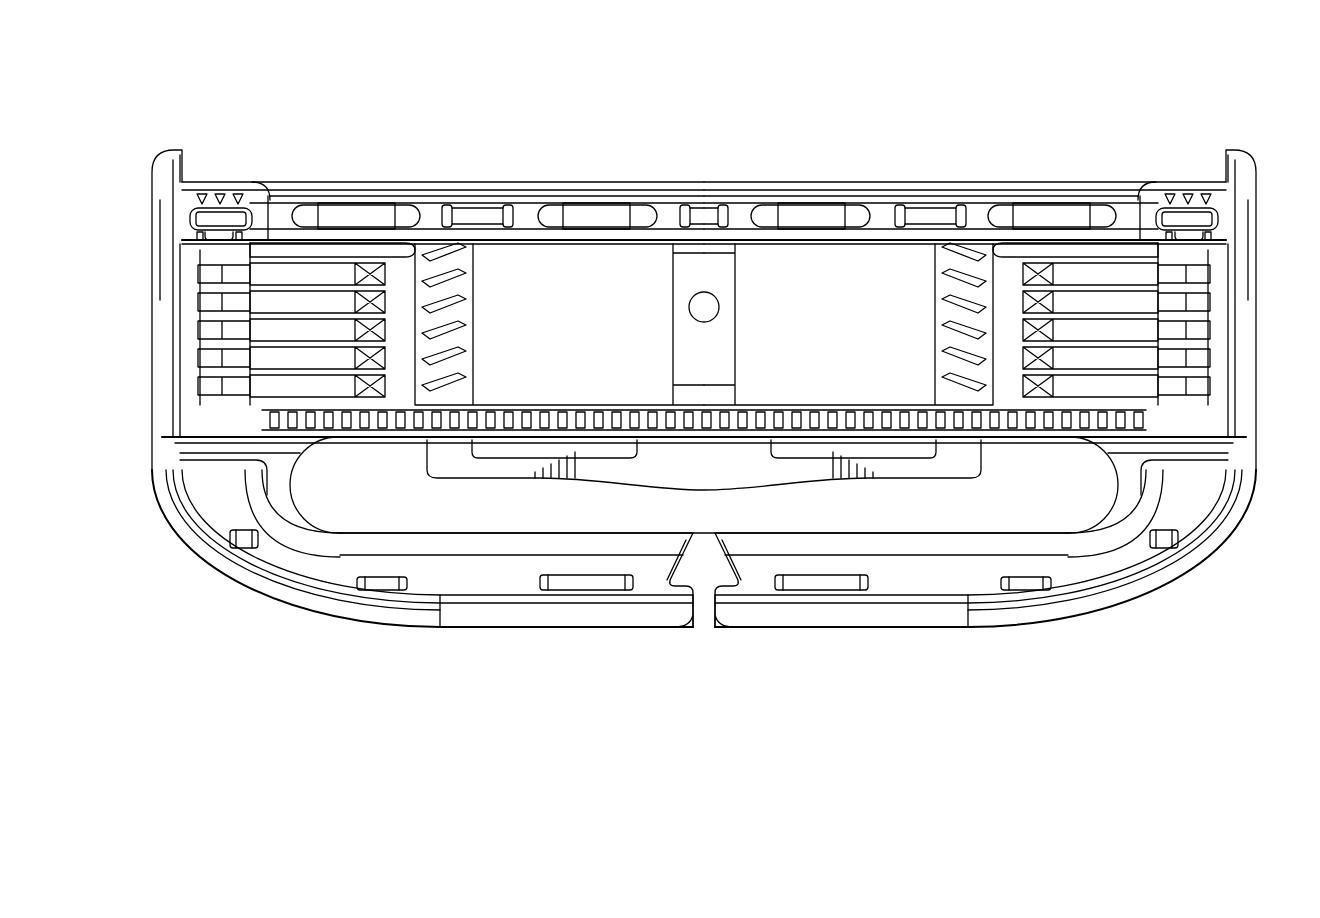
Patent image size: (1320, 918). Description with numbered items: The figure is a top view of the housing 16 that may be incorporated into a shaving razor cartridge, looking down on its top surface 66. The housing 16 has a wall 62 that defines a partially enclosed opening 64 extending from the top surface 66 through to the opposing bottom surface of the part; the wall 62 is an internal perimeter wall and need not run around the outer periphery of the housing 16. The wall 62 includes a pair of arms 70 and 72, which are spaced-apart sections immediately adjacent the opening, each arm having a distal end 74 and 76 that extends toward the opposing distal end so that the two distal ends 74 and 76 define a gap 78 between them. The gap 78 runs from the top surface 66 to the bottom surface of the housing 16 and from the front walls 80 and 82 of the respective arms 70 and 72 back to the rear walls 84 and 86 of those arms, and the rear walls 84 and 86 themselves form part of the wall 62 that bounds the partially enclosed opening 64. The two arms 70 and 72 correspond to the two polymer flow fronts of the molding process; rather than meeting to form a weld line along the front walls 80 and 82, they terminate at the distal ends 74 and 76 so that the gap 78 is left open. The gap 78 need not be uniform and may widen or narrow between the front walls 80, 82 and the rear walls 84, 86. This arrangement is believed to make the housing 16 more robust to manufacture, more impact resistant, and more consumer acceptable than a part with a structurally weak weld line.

The housing 16 is at (1270, 100).
The wall 62 is at (1055, 525).
The partially enclosed opening 64 is at (330, 500).
The top surface 66 is at (1228, 458).
The arm 70 is at (424, 657).
The arm 72 is at (980, 657).
The distal end 74 is at (684, 632).
The distal end 76 is at (724, 632).
The gap 78 is at (706, 642).
The front wall 80 is at (515, 632).
The front wall 82 is at (890, 632).
The rear wall 84 is at (420, 533).
The rear wall 86 is at (990, 533).